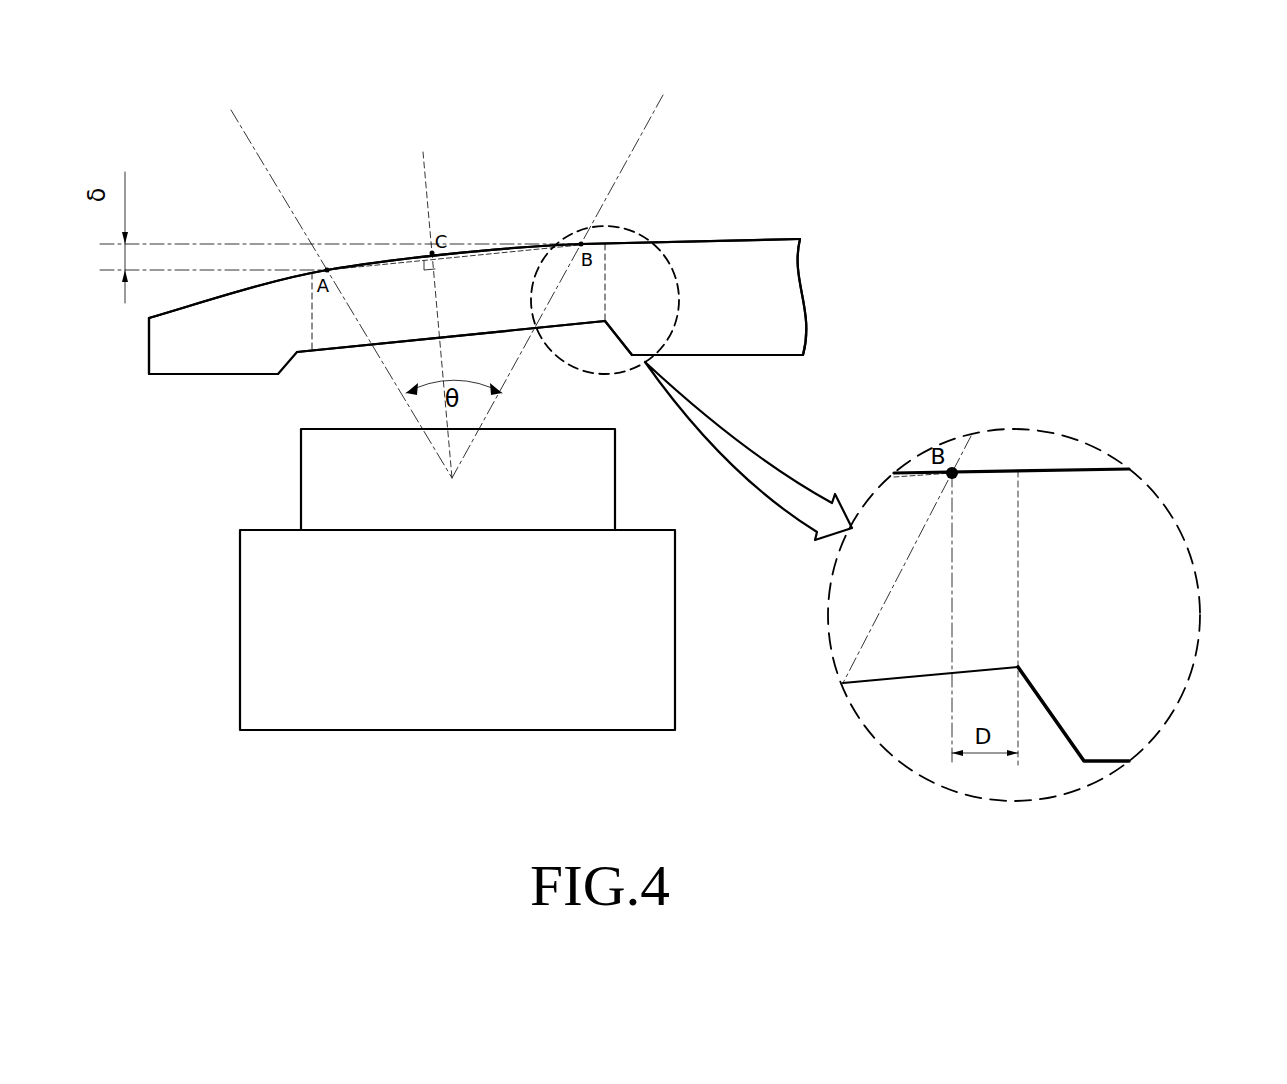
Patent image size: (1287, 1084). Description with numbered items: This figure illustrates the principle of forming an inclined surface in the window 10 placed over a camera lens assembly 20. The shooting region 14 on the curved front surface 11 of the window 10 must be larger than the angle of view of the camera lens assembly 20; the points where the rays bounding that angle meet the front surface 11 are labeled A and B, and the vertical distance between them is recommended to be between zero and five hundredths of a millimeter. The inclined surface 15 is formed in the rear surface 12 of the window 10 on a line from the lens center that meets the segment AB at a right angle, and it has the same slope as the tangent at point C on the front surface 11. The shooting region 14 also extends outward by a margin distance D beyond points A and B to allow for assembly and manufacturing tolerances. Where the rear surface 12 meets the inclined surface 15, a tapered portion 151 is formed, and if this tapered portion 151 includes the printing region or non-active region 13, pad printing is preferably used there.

The window 10 is at (790, 234).
The front surface 11 is at (377, 261).
The rear surface 12 is at (207, 375).
The printing region or non-active region 13 is at (726, 286).
The shooting region 14 is at (506, 276).
The inclined surface 15 is at (347, 352).
The tapered portion 151 is at (1059, 735).
The camera lens assembly 20 is at (253, 675).